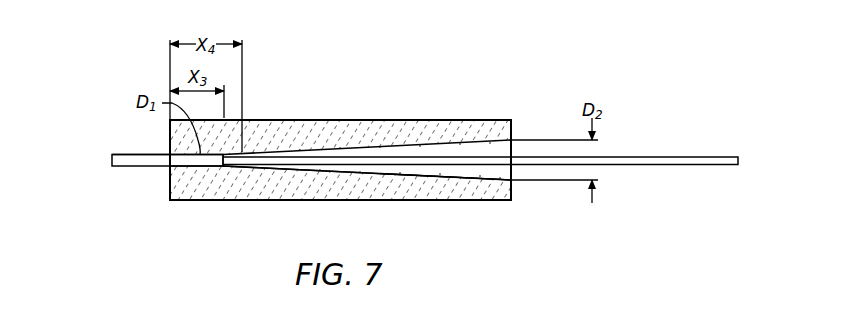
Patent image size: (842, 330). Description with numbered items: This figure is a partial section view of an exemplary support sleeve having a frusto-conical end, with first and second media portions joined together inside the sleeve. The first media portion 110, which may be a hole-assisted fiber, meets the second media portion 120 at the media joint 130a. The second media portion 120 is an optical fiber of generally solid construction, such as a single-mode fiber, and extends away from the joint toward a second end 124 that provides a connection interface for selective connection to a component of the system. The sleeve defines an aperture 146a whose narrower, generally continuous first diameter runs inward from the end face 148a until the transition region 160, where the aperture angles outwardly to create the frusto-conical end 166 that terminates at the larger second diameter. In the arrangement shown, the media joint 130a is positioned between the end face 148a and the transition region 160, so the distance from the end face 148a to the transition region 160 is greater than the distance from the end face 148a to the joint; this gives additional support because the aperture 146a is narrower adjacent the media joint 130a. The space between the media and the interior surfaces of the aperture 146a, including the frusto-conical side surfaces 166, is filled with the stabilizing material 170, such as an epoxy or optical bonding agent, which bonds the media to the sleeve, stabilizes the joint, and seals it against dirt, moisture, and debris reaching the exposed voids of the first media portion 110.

The first media portion 110 is at (643, 155).
The second media portion 120 is at (138, 166).
The second end 124 is at (112, 152).
The media joint 130a is at (243, 152).
The aperture 146a is at (404, 150).
The end face 148a is at (170, 180).
The transition region 160 is at (243, 170).
The frusto-conical end 166 is at (427, 180).
The stabilizing material 170 is at (190, 168).